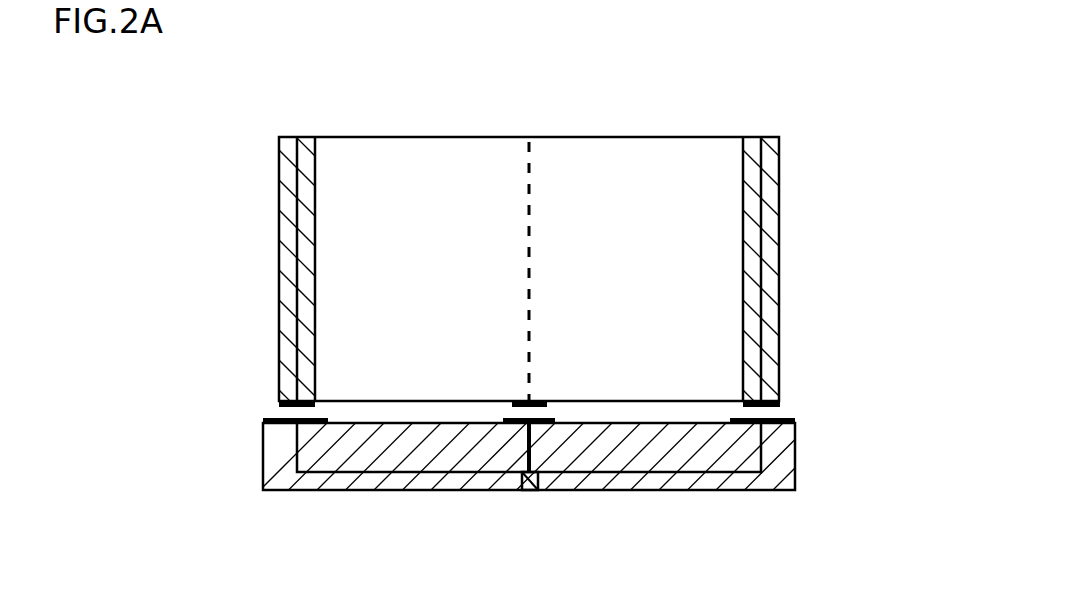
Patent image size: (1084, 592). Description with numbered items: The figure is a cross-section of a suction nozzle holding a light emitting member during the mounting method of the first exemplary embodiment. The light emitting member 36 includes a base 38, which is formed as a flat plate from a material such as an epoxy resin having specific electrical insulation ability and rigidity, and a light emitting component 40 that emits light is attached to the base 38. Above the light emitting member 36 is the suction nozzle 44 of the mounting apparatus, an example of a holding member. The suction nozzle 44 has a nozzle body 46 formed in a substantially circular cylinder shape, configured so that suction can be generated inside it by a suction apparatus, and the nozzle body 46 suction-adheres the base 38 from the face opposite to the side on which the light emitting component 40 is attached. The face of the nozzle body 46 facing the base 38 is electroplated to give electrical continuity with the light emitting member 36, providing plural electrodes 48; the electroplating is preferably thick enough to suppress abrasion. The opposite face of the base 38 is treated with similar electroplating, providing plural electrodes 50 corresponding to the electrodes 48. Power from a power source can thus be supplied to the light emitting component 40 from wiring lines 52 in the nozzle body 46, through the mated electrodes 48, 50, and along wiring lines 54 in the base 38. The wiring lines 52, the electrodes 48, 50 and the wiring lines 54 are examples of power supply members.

The light emitting member 36 is at (260, 459).
The base 38 is at (796, 471).
The light emitting component 40 is at (524, 491).
The suction nozzle 44 is at (276, 243).
The nozzle body 46 is at (775, 248).
The electrodes 48 is at (278, 402).
The electrodes 50 is at (263, 419).
The wiring lines 52 is at (525, 180).
The wiring lines 54 is at (318, 480).